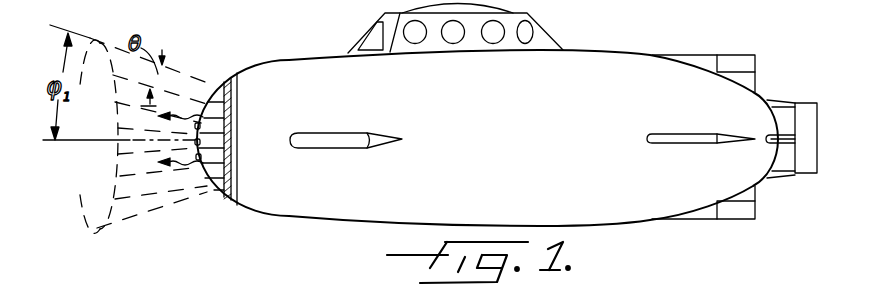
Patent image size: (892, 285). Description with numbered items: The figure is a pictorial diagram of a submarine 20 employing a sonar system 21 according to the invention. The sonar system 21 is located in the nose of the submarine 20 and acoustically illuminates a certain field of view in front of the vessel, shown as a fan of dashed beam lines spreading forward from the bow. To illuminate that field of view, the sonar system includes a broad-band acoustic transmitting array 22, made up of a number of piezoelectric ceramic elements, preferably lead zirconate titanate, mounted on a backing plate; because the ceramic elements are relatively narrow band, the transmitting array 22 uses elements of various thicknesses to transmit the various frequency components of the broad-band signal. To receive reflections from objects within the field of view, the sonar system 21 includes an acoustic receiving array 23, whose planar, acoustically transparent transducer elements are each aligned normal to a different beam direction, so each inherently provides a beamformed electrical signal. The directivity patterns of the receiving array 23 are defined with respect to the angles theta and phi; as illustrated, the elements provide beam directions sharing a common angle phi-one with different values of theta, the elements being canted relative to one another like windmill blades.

The submarine 20 is at (610, 64).
The sonar system 21 is at (223, 75).
The broad-band acoustic transmitting array 22 is at (199, 170).
The acoustic receiving array 23 is at (227, 198).